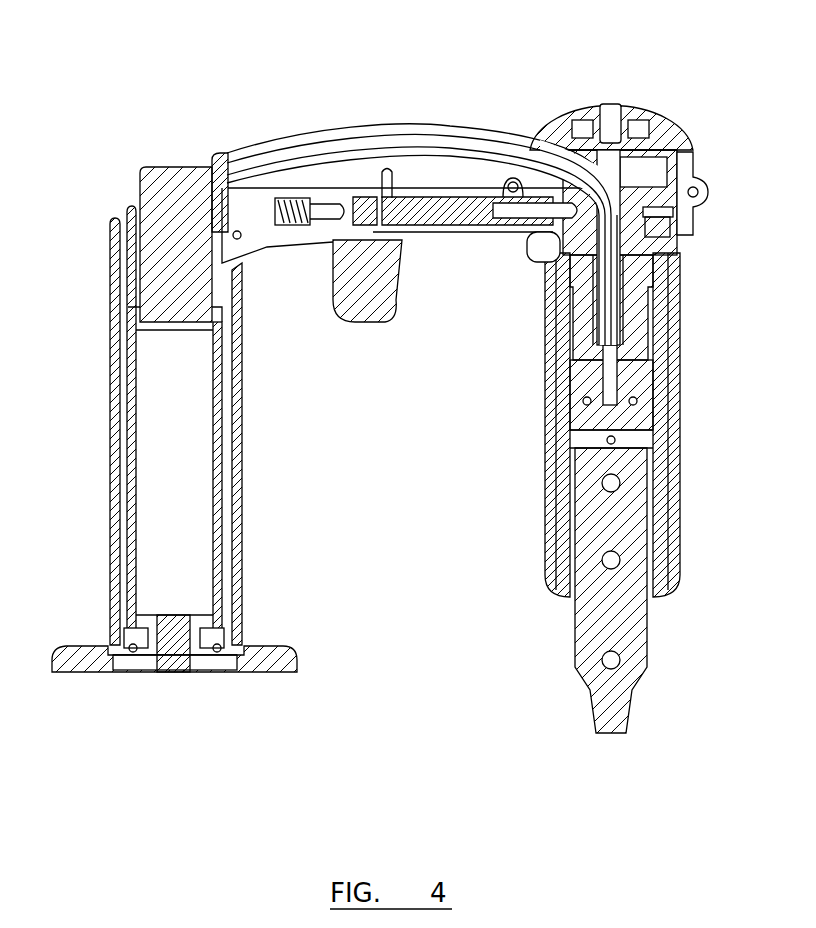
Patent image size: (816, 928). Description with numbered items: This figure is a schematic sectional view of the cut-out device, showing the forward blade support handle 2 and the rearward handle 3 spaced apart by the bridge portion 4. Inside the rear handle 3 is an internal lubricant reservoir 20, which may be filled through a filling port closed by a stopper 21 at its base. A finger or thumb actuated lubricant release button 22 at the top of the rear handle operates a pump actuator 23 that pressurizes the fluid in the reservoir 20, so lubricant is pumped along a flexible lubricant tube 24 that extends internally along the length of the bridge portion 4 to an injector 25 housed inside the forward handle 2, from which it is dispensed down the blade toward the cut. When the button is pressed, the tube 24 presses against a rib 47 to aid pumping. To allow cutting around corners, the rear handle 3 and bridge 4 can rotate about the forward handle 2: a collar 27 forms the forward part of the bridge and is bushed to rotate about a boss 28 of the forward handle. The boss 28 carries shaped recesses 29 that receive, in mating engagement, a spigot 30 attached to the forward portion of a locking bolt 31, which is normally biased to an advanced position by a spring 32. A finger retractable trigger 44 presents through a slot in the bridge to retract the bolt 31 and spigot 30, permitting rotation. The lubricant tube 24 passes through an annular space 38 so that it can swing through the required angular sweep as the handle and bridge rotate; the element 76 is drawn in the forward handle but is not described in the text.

The forward blade support handle 2 is at (682, 438).
The rearward handle 3 is at (238, 547).
The bridge portion 4 is at (478, 128).
The lubricant reservoir 20 is at (178, 481).
The stopper 21 is at (166, 652).
The lubricant release button 22 is at (180, 166).
The pump actuator 23 is at (153, 262).
The flexible lubricant tube 24 is at (430, 150).
The injector 25 is at (628, 255).
The collar 27 is at (683, 168).
The boss 28 is at (548, 238).
The shaped recesses 29 is at (660, 212).
The spigot 30 is at (530, 215).
The locking bolt 31 is at (426, 212).
The spring 32 is at (292, 228).
The annular space 38 is at (637, 182).
The finger retractable trigger 44 is at (362, 306).
The rib 47 is at (387, 170).
The blade 76 is at (622, 632).